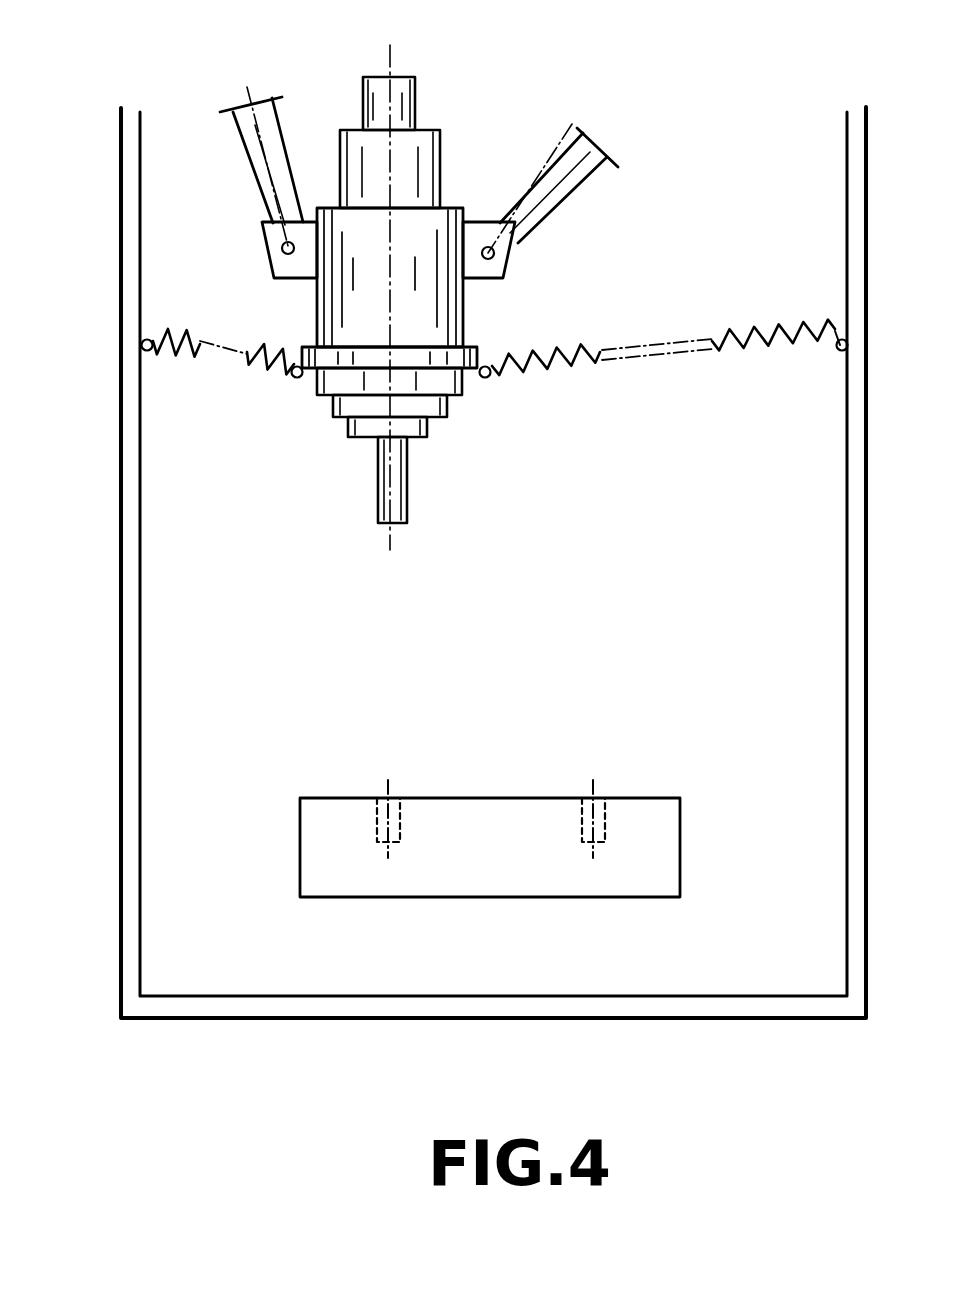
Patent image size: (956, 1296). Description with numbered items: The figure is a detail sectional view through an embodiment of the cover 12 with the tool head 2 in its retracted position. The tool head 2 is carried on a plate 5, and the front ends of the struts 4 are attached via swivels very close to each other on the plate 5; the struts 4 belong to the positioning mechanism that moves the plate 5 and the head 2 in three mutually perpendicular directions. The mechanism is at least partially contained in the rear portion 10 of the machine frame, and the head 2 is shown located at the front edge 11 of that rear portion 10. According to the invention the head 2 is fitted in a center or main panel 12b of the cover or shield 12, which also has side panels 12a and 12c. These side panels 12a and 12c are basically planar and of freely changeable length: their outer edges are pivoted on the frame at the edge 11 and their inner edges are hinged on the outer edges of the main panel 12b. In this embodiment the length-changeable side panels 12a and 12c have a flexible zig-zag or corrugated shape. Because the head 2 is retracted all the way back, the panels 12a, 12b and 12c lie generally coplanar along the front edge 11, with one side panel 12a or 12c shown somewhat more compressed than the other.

The tool head 2 is at (368, 428).
The struts 4 is at (242, 118).
The plate 5 is at (448, 308).
The rear portion 10 is at (140, 198).
The front edge 11 is at (148, 338).
The cover 12 is at (495, 388).
The side panel 12a is at (222, 348).
The main panel 12b is at (443, 362).
The side panel 12c is at (756, 333).